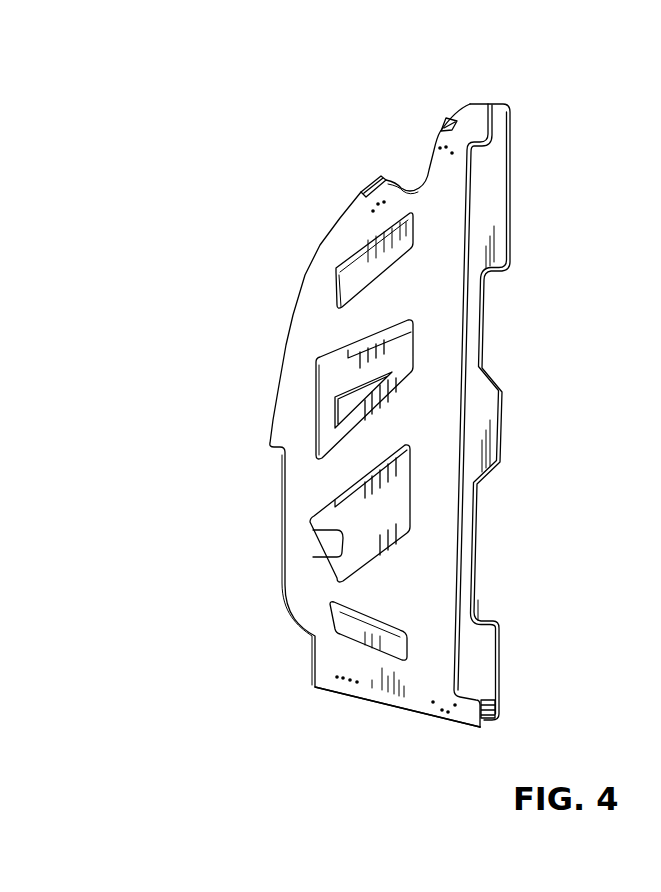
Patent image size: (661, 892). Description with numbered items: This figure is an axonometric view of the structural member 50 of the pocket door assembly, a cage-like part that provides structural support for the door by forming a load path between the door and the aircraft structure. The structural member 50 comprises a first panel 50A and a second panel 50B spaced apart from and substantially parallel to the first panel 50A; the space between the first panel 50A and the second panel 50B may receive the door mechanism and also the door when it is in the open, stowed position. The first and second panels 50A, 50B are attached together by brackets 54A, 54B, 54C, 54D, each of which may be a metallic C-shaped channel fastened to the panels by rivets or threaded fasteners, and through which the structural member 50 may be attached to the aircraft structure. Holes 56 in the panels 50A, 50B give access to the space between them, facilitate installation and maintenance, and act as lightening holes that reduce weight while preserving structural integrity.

The structural member 50 is at (258, 118).
The first panel 50A is at (440, 296).
The second panel 50B is at (478, 204).
The bracket 54A is at (447, 117).
The bracket 54B is at (382, 177).
The bracket 54C is at (485, 712).
The bracket 54D is at (337, 703).
The holes 56 is at (360, 277).